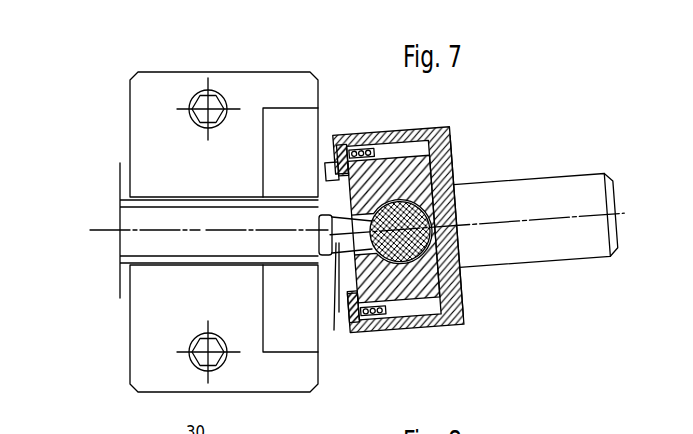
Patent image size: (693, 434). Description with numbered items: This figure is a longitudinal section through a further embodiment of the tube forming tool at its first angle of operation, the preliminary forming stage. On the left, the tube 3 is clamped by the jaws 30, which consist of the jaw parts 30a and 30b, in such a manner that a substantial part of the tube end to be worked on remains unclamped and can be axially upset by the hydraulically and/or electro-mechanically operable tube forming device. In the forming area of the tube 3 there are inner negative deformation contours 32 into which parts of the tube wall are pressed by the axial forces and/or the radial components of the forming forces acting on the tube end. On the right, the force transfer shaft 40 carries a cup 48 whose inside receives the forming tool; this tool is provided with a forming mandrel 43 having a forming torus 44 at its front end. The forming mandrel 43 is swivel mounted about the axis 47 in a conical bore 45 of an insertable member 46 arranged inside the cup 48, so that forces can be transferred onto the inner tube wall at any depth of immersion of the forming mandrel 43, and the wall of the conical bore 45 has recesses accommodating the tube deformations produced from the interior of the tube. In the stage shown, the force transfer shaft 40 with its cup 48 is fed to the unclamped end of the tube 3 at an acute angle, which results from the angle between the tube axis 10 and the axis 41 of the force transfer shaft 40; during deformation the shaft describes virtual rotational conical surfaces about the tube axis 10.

The tube 3 is at (128, 203).
The tube axis 10 is at (112, 231).
The jaws 30 is at (196, 214).
The jaw part 30a is at (148, 113).
The jaw part 30b is at (150, 335).
The inner negative deformation contours 32 is at (260, 191).
The force transfer shaft 40 is at (588, 234).
The axis of the force transfer shaft 41 is at (622, 214).
The forming mandrel 43 is at (334, 330).
The forming torus 44 is at (320, 214).
The conical bore 45 is at (325, 158).
The insertable member 46 is at (413, 300).
The axis 47 is at (420, 196).
The cup 48 is at (438, 148).